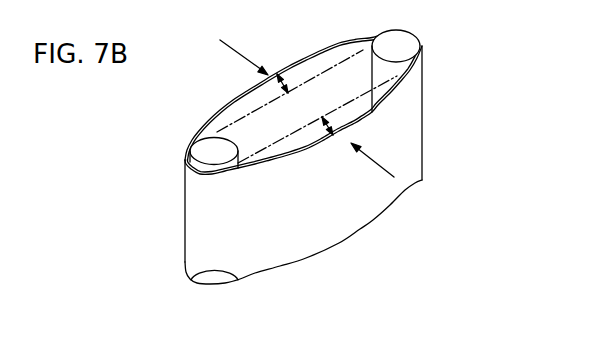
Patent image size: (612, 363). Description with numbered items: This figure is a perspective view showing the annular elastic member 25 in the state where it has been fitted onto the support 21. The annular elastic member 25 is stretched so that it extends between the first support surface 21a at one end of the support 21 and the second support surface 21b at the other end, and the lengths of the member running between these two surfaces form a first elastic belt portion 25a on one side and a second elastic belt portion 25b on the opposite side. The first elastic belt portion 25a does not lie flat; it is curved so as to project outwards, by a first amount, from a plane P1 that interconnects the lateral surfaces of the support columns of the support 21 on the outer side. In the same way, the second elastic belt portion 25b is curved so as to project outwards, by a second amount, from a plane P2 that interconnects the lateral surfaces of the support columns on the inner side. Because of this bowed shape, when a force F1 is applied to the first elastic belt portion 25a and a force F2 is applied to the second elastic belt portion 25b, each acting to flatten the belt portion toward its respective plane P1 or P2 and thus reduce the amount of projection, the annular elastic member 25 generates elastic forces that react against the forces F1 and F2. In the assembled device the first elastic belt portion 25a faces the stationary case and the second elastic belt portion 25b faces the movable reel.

The support 21 is at (298, 170).
The first support surface 21a is at (186, 167).
The second support surface 21b is at (417, 33).
The annular elastic member 25 is at (275, 166).
The first elastic belt portion 25a is at (221, 110).
The second elastic belt portion 25b is at (330, 243).
The plane P1 is at (262, 107).
The plane P2 is at (337, 108).
The force F1 is at (244, 55).
The force F2 is at (373, 160).